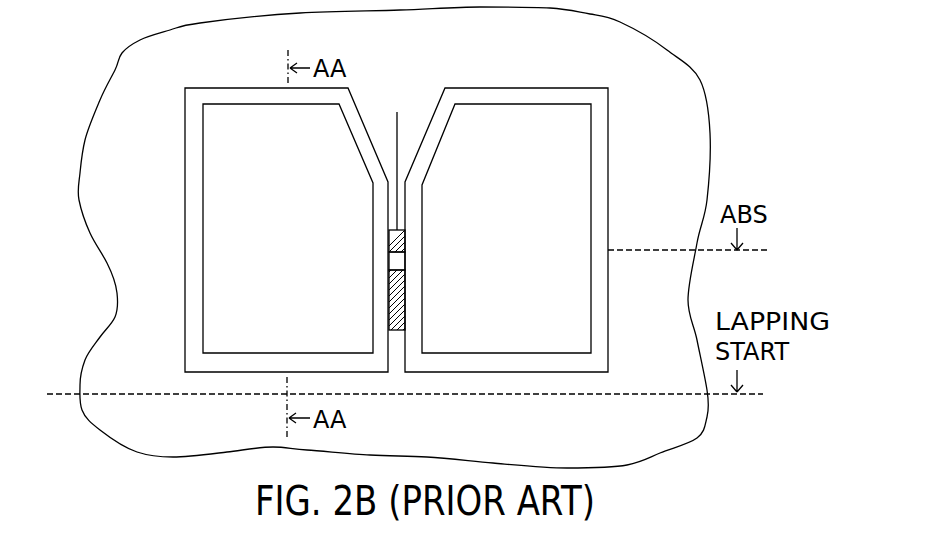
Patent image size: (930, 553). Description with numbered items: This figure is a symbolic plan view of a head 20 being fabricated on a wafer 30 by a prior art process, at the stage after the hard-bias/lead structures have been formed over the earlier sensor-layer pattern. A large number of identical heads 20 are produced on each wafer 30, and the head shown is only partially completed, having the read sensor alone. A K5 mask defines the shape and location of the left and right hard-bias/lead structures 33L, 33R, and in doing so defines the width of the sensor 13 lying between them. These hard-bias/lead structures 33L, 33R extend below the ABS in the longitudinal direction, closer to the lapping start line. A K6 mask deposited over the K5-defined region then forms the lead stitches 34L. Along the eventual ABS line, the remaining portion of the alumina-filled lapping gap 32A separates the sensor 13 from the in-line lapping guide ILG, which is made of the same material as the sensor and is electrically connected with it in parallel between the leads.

The wafer 30 is at (705, 70).
The head 20 is at (628, 153).
The hard-bias/lead structure 33L is at (232, 92).
The hard-bias/lead structure 33R is at (573, 95).
The lead stitch 34L is at (212, 143).
The sensor 13 is at (401, 154).
The remaining portion of the lapping gap 32A is at (395, 260).
The in-line lapping guide ILG is at (405, 307).